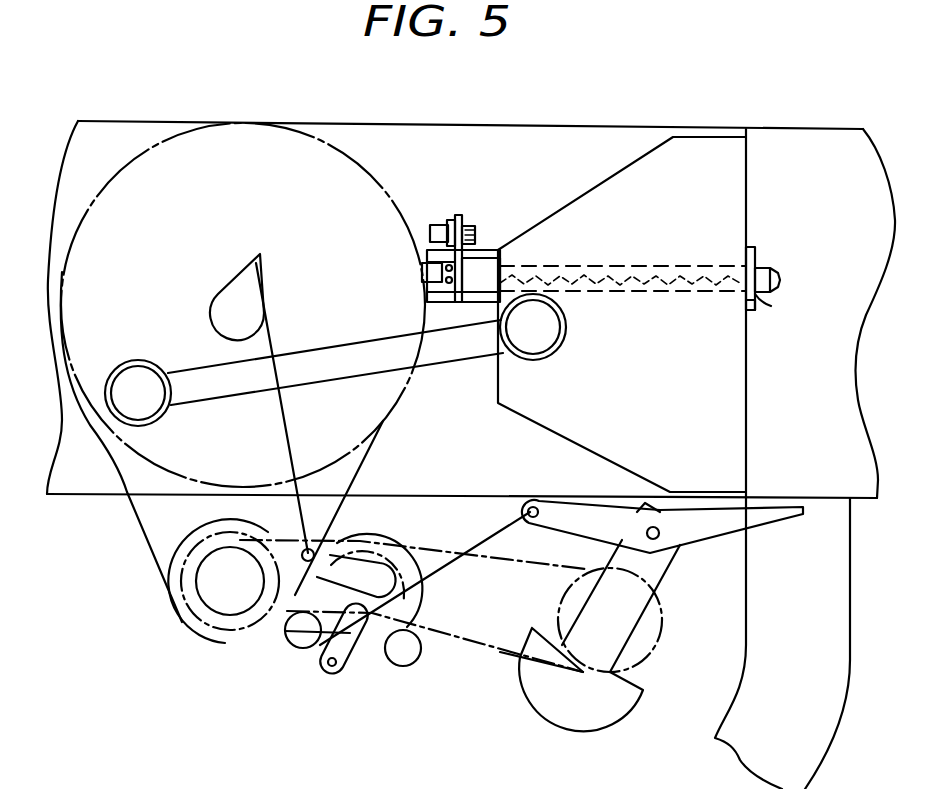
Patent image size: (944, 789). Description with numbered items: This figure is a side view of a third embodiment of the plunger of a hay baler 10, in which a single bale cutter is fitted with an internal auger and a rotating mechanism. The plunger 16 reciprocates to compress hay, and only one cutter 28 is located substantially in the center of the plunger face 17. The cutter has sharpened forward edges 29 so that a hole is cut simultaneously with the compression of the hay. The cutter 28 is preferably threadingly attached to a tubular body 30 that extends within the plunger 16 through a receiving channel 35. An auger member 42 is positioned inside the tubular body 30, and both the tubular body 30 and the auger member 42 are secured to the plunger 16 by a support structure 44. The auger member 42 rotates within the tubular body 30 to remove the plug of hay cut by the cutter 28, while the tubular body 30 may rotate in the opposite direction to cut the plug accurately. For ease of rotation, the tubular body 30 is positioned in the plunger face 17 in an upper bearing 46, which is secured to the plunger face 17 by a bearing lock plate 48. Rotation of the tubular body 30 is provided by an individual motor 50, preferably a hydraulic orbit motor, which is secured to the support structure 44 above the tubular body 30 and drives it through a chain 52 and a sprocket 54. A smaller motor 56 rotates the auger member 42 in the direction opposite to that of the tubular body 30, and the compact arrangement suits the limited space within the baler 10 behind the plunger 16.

The baler 10 is at (559, 108).
The plunger 16 is at (608, 182).
The plunger face 17 is at (749, 170).
The cutter 28 is at (762, 270).
The sharpened forward edges 29 is at (781, 281).
The tubular body 30 is at (650, 265).
The receiving channel 35 is at (606, 249).
The auger member 42 is at (633, 289).
The support structure 44 is at (480, 257).
The upper bearing 46 is at (760, 293).
The bearing lock plate 48 is at (752, 312).
The motor 50 is at (438, 224).
The chain 52 is at (467, 236).
The sprocket 54 is at (436, 297).
The smaller motor 56 is at (422, 262).